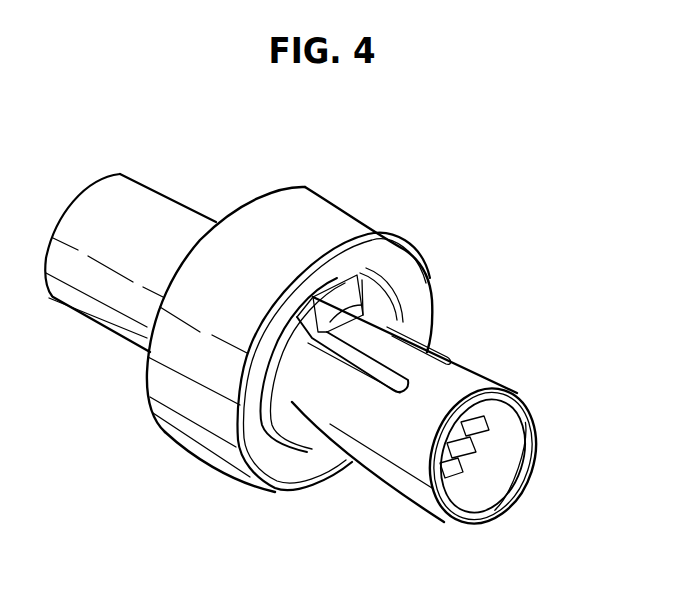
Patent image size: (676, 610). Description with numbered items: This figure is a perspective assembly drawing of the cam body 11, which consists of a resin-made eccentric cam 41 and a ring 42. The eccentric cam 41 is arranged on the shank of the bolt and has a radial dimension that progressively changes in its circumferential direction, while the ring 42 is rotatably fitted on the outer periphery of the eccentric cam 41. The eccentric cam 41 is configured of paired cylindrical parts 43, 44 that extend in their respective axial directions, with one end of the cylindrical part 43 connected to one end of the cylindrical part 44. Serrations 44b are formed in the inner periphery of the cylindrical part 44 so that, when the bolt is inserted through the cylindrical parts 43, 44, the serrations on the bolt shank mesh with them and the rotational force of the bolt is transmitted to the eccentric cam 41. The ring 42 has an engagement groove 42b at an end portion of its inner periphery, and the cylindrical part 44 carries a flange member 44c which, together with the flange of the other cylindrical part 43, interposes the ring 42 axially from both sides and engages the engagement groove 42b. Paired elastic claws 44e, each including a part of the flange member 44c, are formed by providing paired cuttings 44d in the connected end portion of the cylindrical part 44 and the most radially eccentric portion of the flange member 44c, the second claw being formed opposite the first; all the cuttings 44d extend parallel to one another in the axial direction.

The cam body 11 is at (334, 187).
The eccentric cam 41 is at (83, 318).
The ring 42 is at (205, 435).
The engagement groove 42b is at (290, 455).
The cylindrical part 43 is at (168, 206).
The cylindrical part 44 is at (463, 377).
The serrations 44b is at (464, 432).
The flange member 44c is at (293, 352).
The cuttings 44d is at (414, 356).
The elastic claw 44e is at (364, 333).